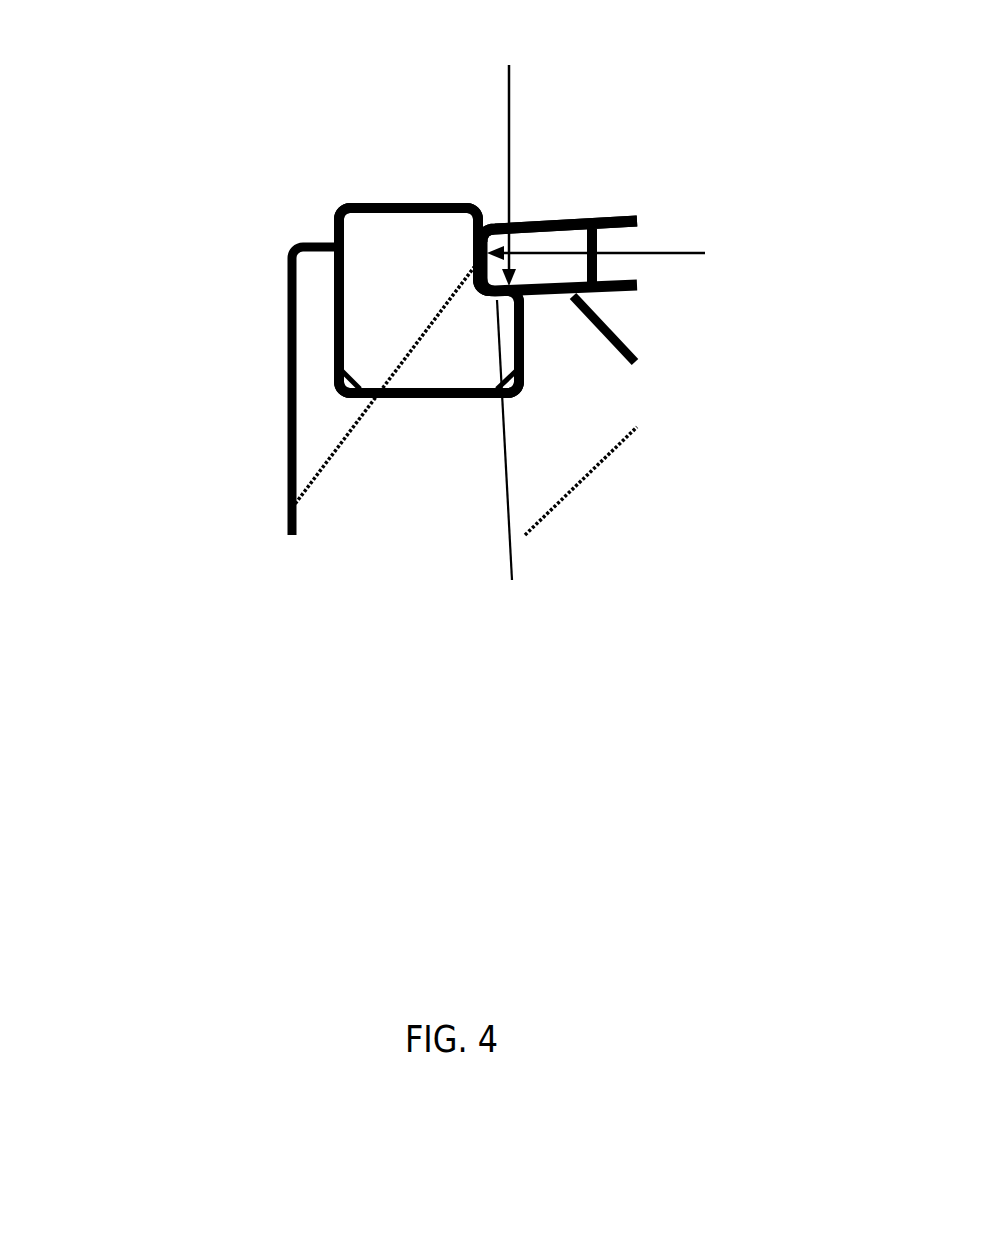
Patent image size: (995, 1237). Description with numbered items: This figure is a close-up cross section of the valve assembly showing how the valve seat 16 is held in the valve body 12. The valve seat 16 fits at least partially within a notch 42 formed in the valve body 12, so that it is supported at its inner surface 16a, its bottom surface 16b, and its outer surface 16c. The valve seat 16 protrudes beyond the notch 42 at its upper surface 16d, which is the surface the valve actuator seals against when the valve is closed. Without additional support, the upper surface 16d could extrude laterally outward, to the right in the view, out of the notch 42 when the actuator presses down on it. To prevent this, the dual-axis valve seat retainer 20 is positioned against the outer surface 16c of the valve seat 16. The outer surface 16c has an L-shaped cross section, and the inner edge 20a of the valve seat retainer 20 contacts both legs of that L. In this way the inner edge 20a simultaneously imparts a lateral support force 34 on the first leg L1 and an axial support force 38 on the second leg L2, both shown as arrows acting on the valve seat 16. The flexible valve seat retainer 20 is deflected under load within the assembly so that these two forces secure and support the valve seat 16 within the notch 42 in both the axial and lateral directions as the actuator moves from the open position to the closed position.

The valve body 12 is at (577, 440).
The valve seat 16 is at (370, 292).
The inner surface 16a is at (348, 277).
The bottom surface 16b is at (423, 383).
The outer surface 16c is at (523, 347).
The upper surface 16d is at (415, 207).
The valve seat retainer 20 is at (563, 265).
The inner edge 20a is at (548, 240).
The lateral support force 34 is at (625, 252).
The axial support force 38 is at (508, 149).
The notch 42 is at (285, 522).
The first leg L1 is at (475, 248).
The second leg L2 is at (510, 469).